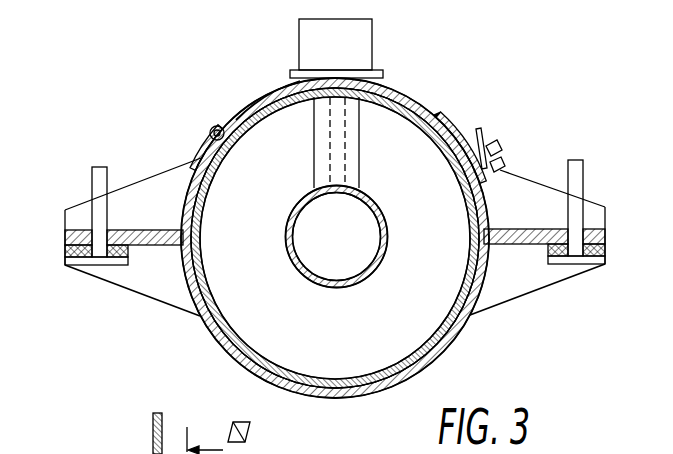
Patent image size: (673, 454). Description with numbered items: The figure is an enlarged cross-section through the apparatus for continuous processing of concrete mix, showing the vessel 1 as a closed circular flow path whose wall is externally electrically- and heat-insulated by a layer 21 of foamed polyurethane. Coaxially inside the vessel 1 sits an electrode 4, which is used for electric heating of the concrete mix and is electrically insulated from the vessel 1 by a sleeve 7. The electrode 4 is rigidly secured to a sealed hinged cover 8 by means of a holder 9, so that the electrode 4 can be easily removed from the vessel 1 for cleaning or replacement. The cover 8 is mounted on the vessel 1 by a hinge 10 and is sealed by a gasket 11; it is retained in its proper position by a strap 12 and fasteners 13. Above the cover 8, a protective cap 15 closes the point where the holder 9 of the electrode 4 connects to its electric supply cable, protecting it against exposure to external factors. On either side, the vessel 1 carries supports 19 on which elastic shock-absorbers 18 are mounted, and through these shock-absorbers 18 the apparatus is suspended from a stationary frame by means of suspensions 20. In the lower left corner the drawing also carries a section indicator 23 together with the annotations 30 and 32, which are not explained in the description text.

The vessel 1 is at (466, 322).
The layer of foamed polyurethane 21 is at (440, 356).
The electrode 4 is at (318, 289).
The sleeve 7 is at (350, 160).
The sealed hinged cover 8 is at (269, 94).
The holder 9 is at (338, 133).
The hinge 10 is at (216, 126).
The gasket 11 is at (205, 152).
The strap 12 is at (503, 164).
The fastener 13 is at (479, 132).
The protective cap 15 is at (305, 37).
The elastic shock-absorber 18 is at (70, 248).
The support 19 is at (543, 282).
The suspension 20 is at (97, 182).
The section indicator 23 is at (170, 447).
The plate element 30 is at (153, 416).
The plate element 32 is at (111, 441).